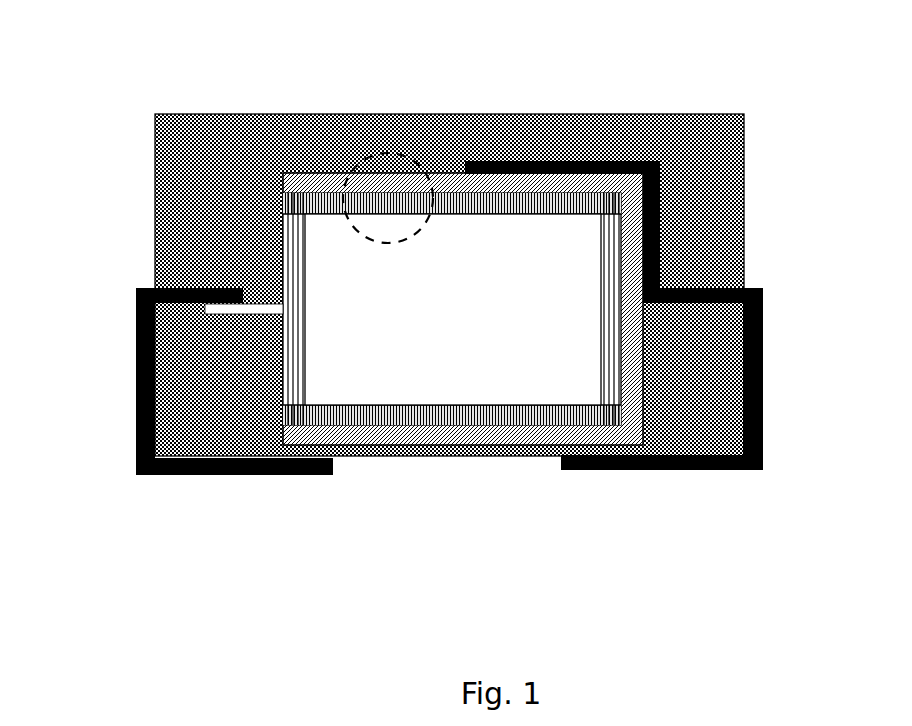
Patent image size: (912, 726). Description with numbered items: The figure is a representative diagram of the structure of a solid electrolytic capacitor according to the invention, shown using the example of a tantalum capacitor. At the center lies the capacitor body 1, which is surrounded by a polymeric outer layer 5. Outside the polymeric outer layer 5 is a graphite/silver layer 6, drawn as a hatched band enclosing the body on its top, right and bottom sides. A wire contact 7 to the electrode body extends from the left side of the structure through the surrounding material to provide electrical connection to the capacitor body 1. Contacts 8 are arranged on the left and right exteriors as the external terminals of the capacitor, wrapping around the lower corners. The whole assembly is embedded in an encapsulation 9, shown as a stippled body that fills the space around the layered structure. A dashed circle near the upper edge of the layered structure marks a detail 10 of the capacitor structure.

The capacitor body 1 is at (417, 352).
The polymeric outer layer 5 is at (278, 230).
The graphite/silver layer 6 is at (476, 430).
The wire contact to the electrode body 7 is at (156, 398).
The contacts 8 is at (128, 330).
The encapsulation 9 is at (710, 180).
The detail 10 is at (375, 147).